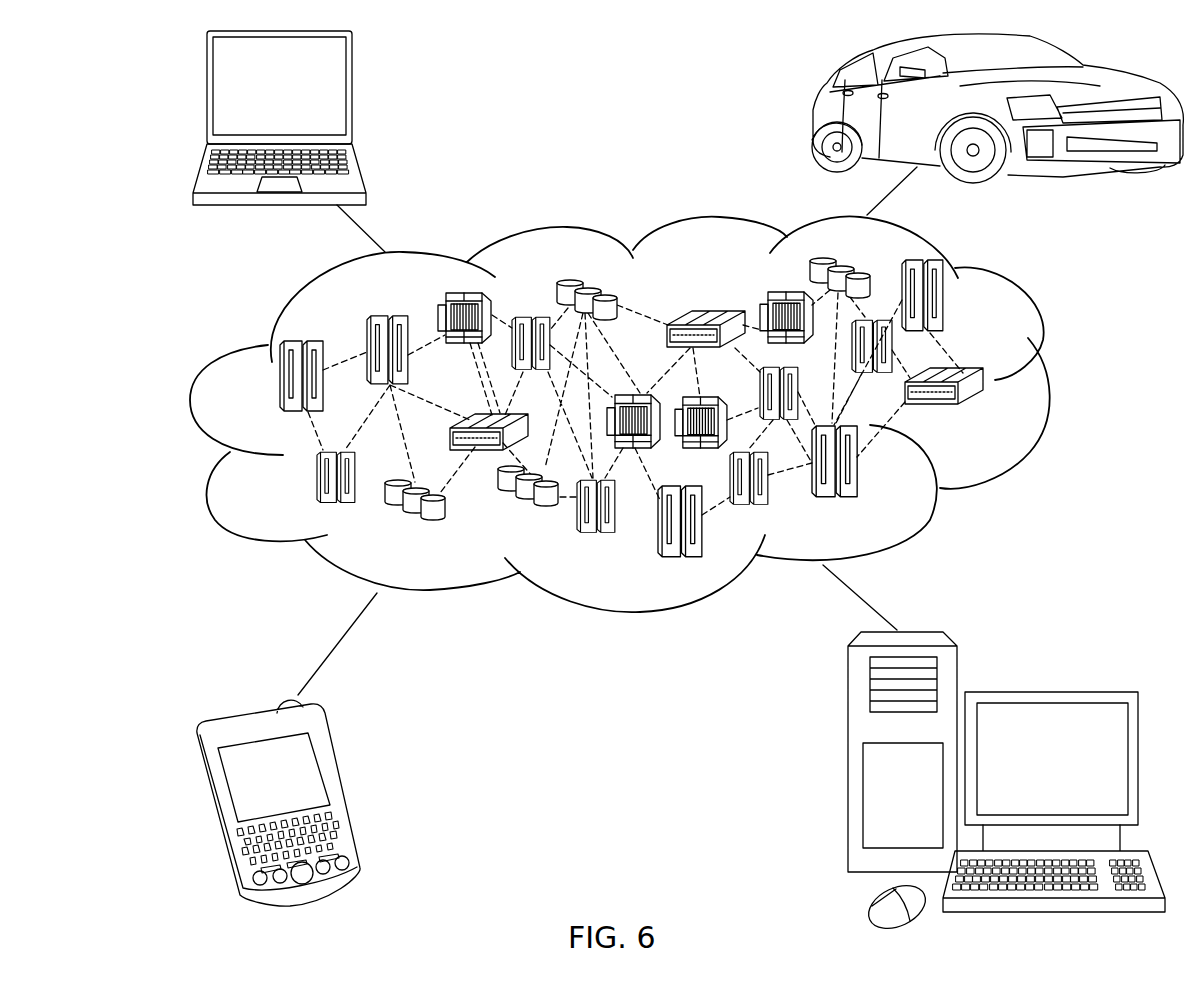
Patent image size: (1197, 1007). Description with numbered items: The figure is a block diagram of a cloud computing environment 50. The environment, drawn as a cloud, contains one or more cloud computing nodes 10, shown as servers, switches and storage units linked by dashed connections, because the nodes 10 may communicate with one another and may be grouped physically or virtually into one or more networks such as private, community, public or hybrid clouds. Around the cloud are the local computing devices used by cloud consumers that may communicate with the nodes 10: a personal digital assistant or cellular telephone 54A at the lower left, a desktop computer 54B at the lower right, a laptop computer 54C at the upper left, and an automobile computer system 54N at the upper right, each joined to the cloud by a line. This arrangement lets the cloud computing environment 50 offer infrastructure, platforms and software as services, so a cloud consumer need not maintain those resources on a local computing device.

The cloud computing nodes 10 is at (988, 418).
The cloud computing environment 50 is at (1047, 383).
The personal digital assistant or cellular telephone 54A is at (343, 787).
The desktop computer 54B is at (1049, 691).
The laptop computer 54C is at (352, 95).
The automobile computer system 54N is at (815, 110).